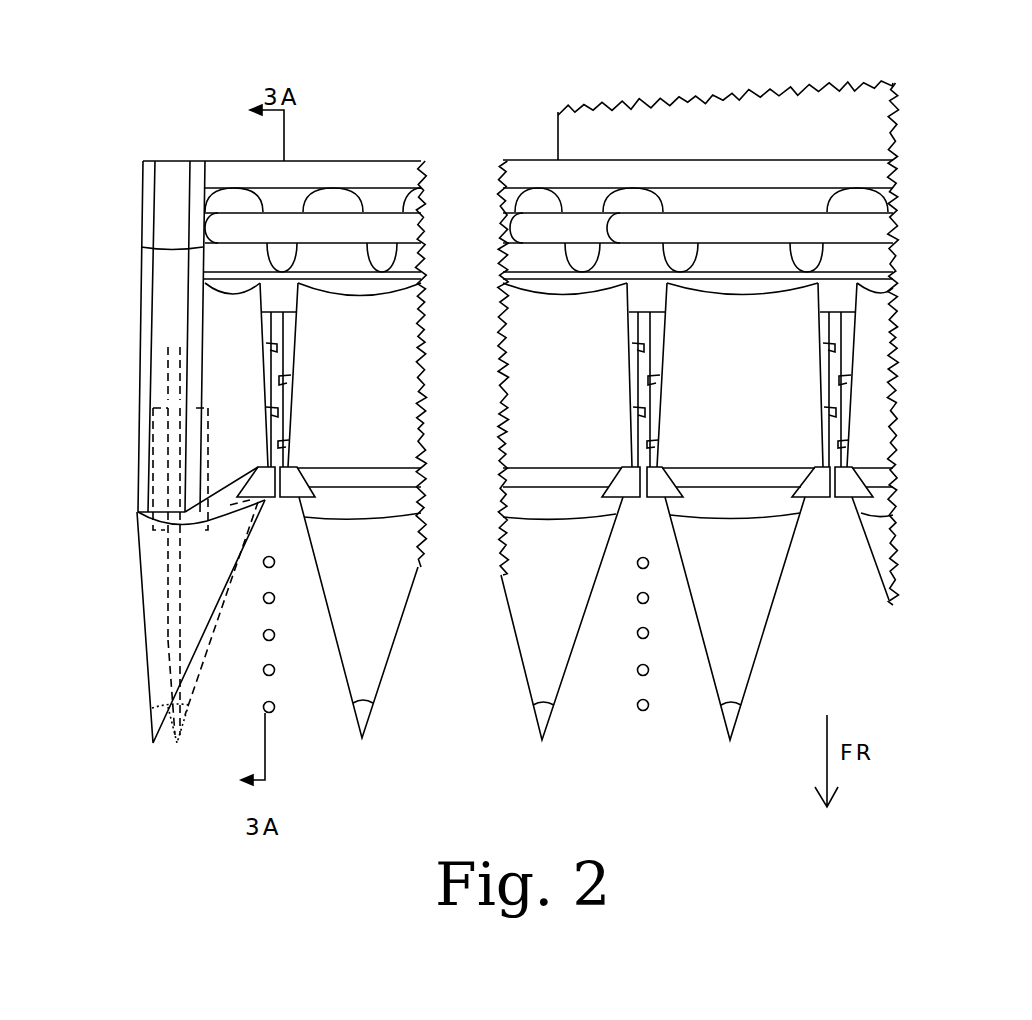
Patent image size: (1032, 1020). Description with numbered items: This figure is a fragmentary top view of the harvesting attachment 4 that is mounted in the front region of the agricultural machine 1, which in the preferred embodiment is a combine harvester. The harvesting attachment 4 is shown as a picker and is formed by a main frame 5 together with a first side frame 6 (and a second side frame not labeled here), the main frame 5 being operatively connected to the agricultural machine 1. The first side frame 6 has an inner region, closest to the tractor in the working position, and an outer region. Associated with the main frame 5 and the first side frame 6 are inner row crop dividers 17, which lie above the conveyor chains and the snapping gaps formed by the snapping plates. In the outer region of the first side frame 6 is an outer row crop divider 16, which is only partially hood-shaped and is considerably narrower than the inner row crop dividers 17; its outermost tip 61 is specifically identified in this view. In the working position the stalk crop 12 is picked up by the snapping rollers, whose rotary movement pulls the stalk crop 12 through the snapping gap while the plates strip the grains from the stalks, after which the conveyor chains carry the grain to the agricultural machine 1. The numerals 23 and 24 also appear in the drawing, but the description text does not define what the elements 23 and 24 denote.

The agricultural machine 1 is at (822, 148).
The harvesting attachment 4 is at (402, 135).
The main frame 5 is at (862, 177).
The first side frame 6 is at (250, 170).
The stalk crop 12 is at (271, 712).
The outer row crop divider 16 is at (195, 598).
The inner row crop dividers 17 is at (360, 653).
The conical tine 23 is at (665, 677).
The bracket post 24 is at (172, 482).
The outermost tip 61 is at (152, 720).